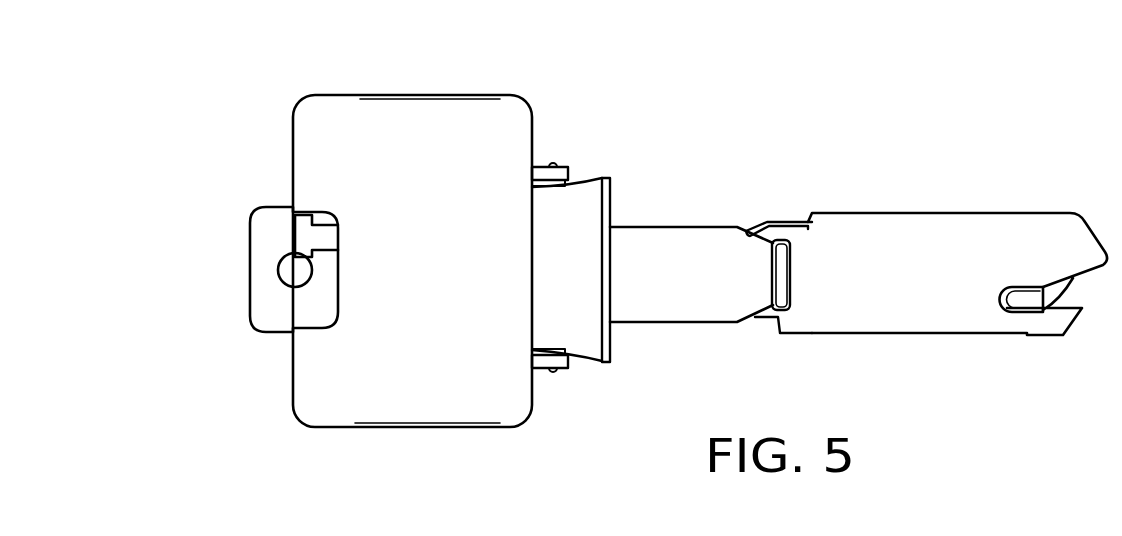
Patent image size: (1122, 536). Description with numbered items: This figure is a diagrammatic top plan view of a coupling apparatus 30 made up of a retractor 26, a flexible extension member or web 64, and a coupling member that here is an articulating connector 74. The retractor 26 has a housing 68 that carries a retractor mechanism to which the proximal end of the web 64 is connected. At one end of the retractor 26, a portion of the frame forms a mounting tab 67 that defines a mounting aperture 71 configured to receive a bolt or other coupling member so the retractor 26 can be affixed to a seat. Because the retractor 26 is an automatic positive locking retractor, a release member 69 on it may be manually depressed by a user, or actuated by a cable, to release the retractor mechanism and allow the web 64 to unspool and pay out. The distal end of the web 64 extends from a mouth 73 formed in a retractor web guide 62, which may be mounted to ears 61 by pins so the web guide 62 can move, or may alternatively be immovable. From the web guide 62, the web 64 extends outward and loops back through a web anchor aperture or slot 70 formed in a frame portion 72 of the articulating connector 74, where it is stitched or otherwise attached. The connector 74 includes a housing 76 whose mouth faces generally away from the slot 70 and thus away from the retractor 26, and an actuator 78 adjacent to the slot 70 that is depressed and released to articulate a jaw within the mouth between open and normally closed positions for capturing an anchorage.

The coupling apparatus 30 is at (641, 111).
The retractor 26 is at (388, 94).
The housing 68 is at (438, 283).
The mounting tab 67 is at (265, 285).
The release member 69 is at (298, 240).
The mounting aperture 71 is at (287, 270).
The ears 61 is at (542, 167).
The retractor web guide 62 is at (589, 361).
The mouth 73 is at (611, 193).
The flexible extension member or web 64 is at (699, 285).
The articulating connector 74 is at (976, 189).
The web anchor aperture or slot 70 is at (757, 231).
The frame portion 72 is at (781, 223).
The actuator 78 is at (757, 318).
The housing 76 is at (920, 283).